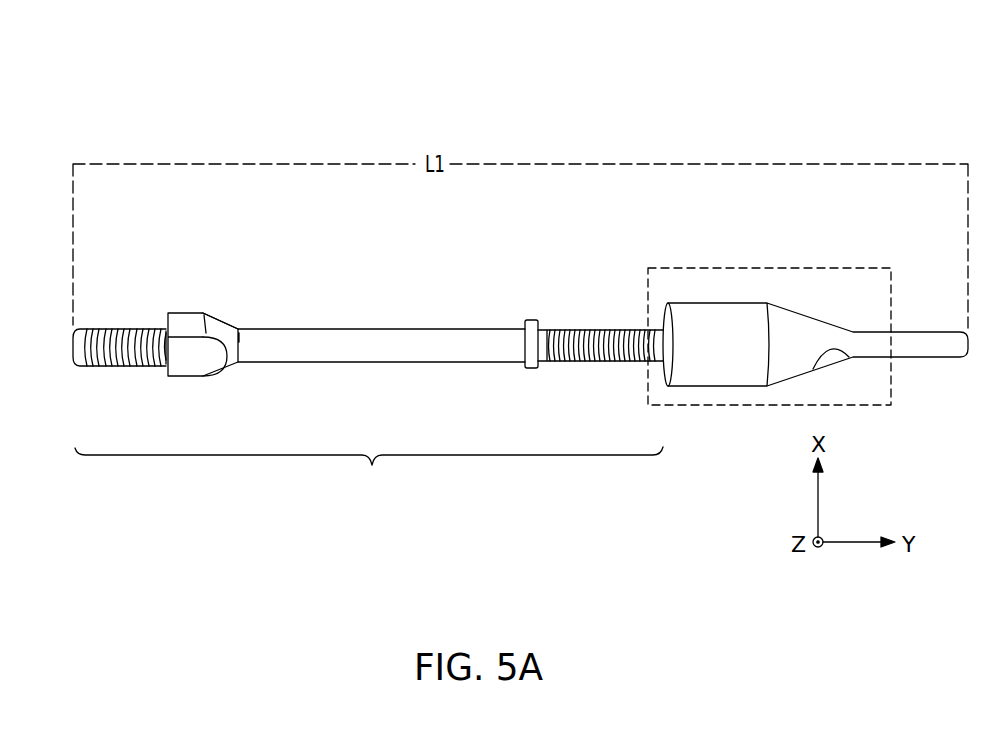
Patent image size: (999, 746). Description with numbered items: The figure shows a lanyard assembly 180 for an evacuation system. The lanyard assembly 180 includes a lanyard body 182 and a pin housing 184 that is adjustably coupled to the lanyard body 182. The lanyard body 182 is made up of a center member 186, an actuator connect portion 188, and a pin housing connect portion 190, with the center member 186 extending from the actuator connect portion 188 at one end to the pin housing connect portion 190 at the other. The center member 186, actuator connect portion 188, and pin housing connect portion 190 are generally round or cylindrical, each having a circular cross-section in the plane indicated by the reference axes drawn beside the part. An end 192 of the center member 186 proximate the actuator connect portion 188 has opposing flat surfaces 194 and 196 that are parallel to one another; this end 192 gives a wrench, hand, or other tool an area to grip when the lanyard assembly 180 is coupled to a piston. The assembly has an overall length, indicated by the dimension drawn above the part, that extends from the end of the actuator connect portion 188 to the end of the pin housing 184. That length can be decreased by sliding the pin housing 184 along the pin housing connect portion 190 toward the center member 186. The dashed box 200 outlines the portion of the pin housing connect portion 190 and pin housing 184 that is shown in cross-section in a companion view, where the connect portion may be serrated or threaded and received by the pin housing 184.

The lanyard assembly 180 is at (149, 126).
The lanyard body 182 is at (368, 368).
The pin housing 184 is at (740, 302).
The center member 186 is at (383, 338).
The actuator connect portion 188 is at (110, 329).
The pin housing connect portion 190 is at (652, 325).
The end of center member 192 is at (193, 320).
The flat surface 194 is at (190, 360).
The flat surface 196 is at (200, 313).
The box 200 is at (840, 265).